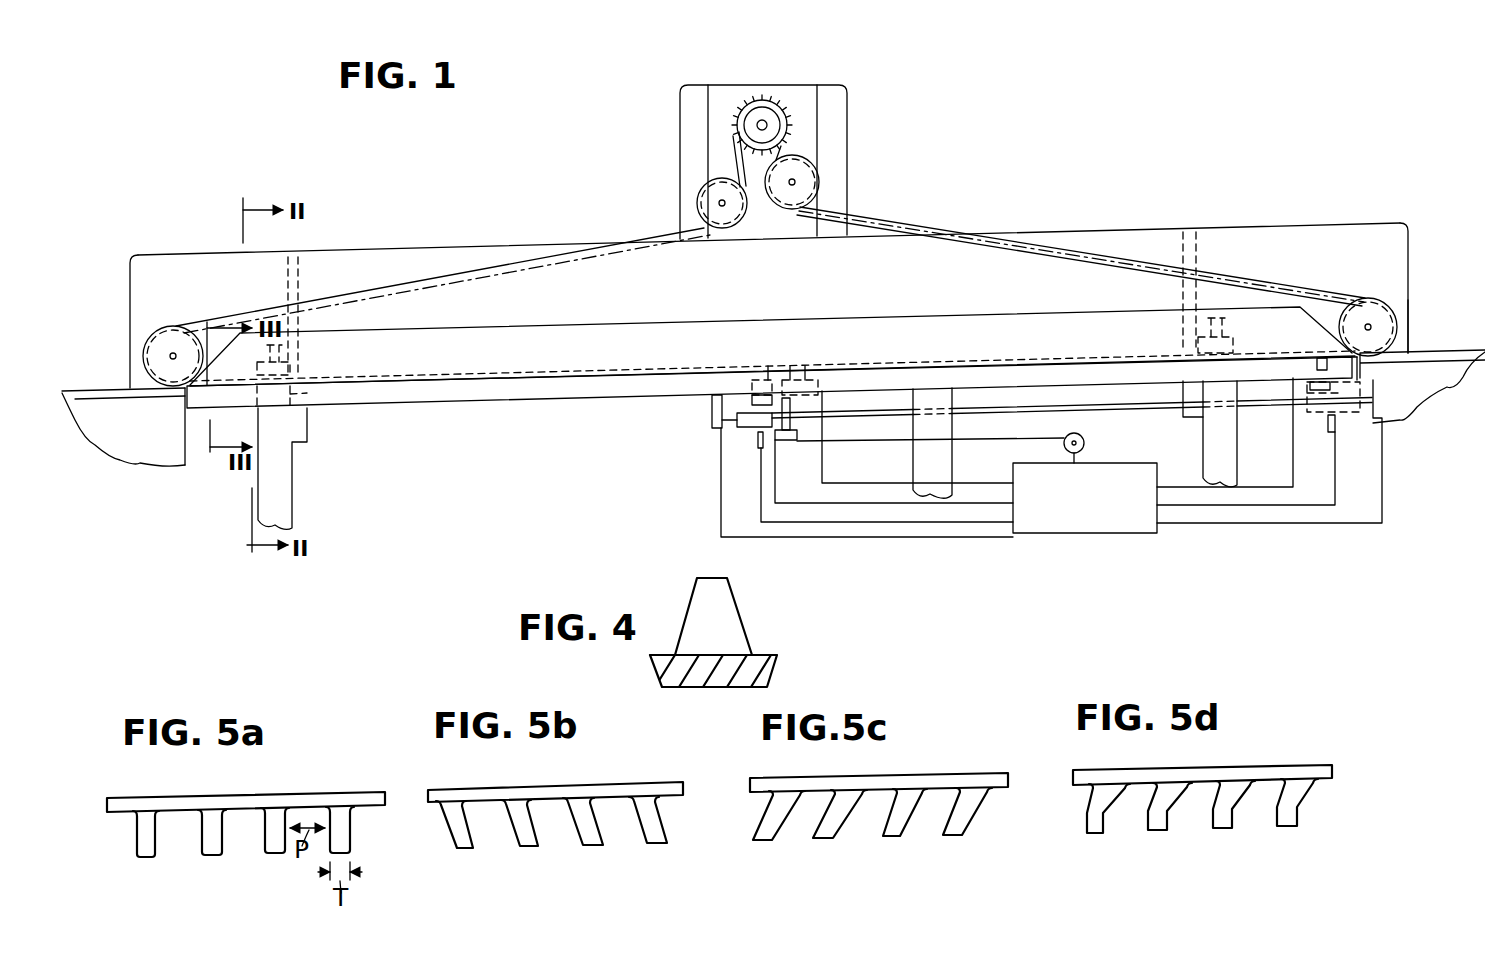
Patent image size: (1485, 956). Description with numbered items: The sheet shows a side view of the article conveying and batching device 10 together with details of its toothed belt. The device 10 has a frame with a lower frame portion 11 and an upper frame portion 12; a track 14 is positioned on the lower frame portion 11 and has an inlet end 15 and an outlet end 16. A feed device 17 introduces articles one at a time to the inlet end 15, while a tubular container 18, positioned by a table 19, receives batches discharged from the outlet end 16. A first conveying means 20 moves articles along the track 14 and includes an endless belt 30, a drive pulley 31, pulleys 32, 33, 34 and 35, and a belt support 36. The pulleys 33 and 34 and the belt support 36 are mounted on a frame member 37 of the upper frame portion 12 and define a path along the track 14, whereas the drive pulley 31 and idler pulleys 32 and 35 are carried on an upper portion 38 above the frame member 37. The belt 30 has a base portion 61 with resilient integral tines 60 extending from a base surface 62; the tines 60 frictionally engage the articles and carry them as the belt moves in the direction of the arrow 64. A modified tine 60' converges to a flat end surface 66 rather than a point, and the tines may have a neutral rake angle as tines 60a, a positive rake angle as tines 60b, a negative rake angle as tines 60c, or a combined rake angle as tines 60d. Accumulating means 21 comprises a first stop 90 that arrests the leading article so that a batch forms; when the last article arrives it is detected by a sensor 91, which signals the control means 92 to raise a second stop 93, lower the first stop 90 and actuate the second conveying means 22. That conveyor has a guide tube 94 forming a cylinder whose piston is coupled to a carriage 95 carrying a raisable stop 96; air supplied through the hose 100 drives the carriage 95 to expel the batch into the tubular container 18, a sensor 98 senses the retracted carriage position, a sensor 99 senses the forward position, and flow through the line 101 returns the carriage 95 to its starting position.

In FIG. 1, the device 10 is at (1031, 216).
In FIG. 1, the lower frame portion 11 is at (283, 487).
In FIG. 1, the upper frame portion 12 is at (415, 254).
In FIG. 1, the track 14 is at (434, 409).
In FIG. 1, the inlet end 15 is at (183, 410).
In FIG. 1, the outlet end 16 is at (1360, 370).
In FIG. 1, the feed device 17 is at (118, 442).
In FIG. 1, the tubular container 18 is at (1438, 355).
In FIG. 1, the table 19 is at (1457, 388).
In FIG. 1, the first conveying means 20 is at (1240, 271).
In FIG. 1, the accumulating means 21 is at (1250, 351).
In FIG. 1, the second conveying means 22 is at (1116, 413).
In FIG. 1, the endless belt 30 is at (920, 229).
In FIG. 1, the drive pulley 31 is at (771, 118).
In FIG. 1, the idler pulley 32 is at (816, 182).
In FIG. 1, the pulley 33 is at (1372, 300).
In FIG. 1, the pulley 34 is at (173, 330).
In FIG. 1, the idler pulley 35 is at (700, 204).
In FIG. 1, the belt support 36 is at (686, 326).
In FIG. 1, the frame member 37 is at (1139, 238).
In FIG. 1, the upper portion 38 is at (836, 106).
In FIG. 1, the tines 60 is at (772, 210).
In FIG. 4, the modified tine 60' is at (742, 610).
In FIG. 5A, the tines with neutral rake angle 60a is at (211, 855).
In FIG. 5B, the tines with positive rake angle 60b is at (598, 845).
In FIG. 5C, the tines with negative rake angle 60c is at (889, 838).
In FIG. 5D, the tines with combined rake angle 60d is at (1158, 830).
In FIG. 4, the base portion 61 is at (780, 667).
In FIG. 4, the base surface 62 is at (765, 655).
In FIG. 1, the arrow 64 is at (690, 352).
In FIG. 5A, the arrow 64 is at (273, 774).
In FIG. 5B, the arrow 64 is at (675, 763).
In FIG. 5C, the arrow 64 is at (997, 758).
In FIG. 5D, the arrow 64 is at (1320, 748).
In FIG. 4, the end surface 66 is at (708, 578).
In FIG. 1, the first stop 90 is at (1318, 366).
In FIG. 1, the sensor 91 is at (800, 363).
In FIG. 1, the control means 92 is at (1085, 498).
In FIG. 1, the second stop 93 is at (767, 380).
In FIG. 1, the guide tube 94 is at (1040, 410).
In FIG. 1, the carriage 95 is at (745, 428).
In FIG. 1, the raisable stop 96 is at (783, 441).
In FIG. 1, the sensor 98 is at (760, 450).
In FIG. 1, the sensor 99 is at (1328, 428).
In FIG. 1, the hose 100 is at (721, 494).
In FIG. 1, the line 101 is at (1265, 524).